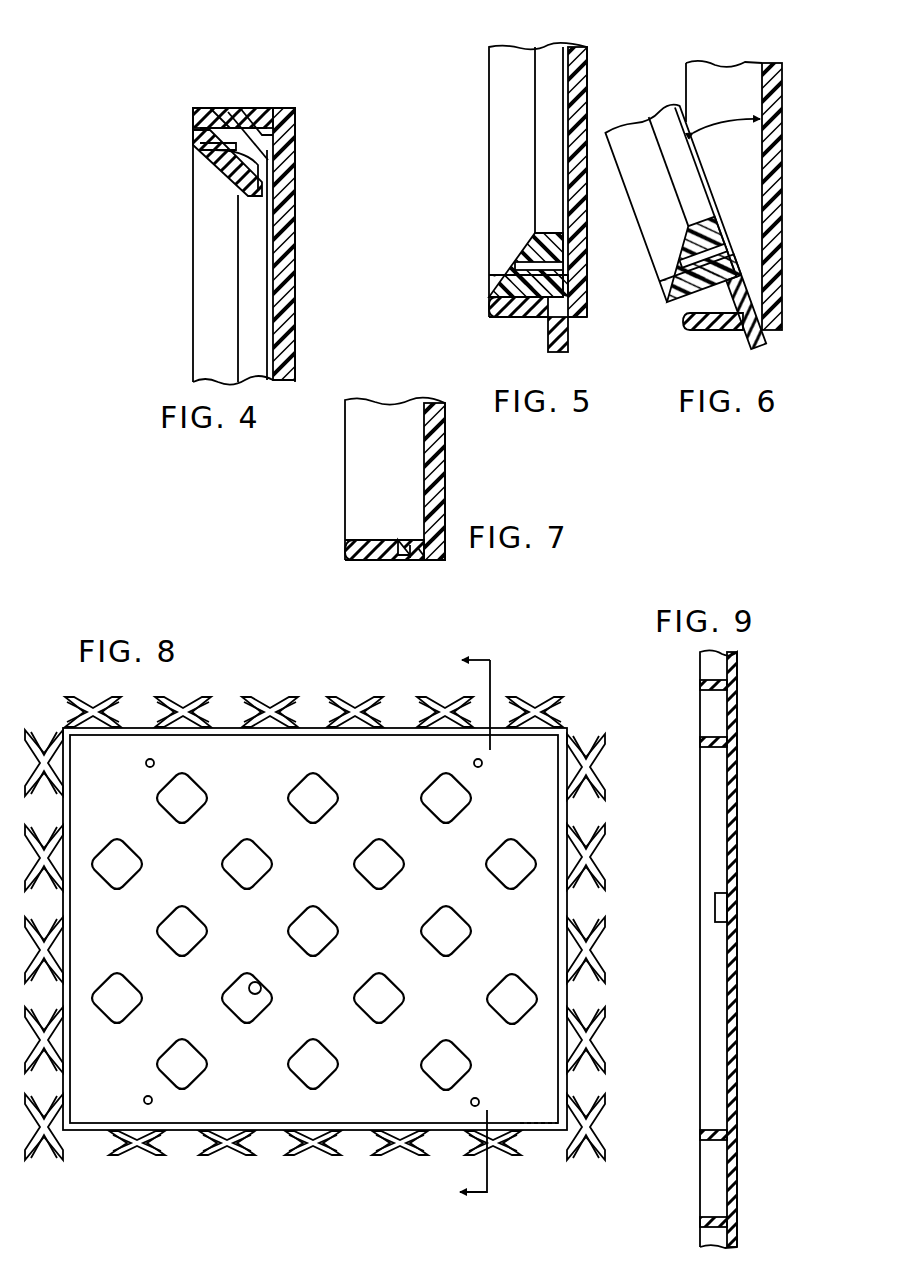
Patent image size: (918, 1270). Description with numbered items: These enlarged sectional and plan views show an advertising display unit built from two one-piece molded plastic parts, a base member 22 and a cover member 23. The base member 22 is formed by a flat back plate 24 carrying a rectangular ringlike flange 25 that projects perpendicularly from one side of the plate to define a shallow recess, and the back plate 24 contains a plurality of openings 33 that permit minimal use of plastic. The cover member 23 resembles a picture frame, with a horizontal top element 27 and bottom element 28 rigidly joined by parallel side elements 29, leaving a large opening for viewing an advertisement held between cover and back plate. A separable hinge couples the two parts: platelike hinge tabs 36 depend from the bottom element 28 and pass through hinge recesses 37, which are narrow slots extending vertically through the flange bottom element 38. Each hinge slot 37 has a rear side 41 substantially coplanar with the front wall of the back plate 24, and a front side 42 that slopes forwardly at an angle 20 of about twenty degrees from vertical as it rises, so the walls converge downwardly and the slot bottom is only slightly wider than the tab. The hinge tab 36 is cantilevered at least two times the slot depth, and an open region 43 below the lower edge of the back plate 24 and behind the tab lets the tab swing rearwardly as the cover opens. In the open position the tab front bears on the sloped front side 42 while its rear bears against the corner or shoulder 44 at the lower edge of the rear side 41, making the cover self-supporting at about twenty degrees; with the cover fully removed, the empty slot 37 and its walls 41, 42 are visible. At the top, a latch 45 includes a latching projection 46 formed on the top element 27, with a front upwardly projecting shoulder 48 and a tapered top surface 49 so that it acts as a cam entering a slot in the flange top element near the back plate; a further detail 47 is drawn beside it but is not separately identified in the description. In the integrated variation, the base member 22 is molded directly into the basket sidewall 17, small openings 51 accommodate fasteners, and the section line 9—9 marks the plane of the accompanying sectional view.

In FIG. 8, the section line 9 is at (463, 934).
In FIG. 8, the sidewall 17 is at (588, 850).
In FIG. 9, the sidewall 17 is at (712, 662).
In FIG. 6, the twenty-degree angle 20 is at (726, 113).
In FIG. 4, the base member 22 is at (305, 322).
In FIG. 5, the base member 22 is at (590, 60).
In FIG. 7, the base member 22 is at (340, 477).
In FIG. 8, the base member 22 is at (222, 722).
In FIG. 9, the base member 22 is at (745, 808).
In FIG. 4, the cover member 23 is at (190, 236).
In FIG. 5, the cover member 23 is at (485, 192).
In FIG. 6, the cover member 23 is at (636, 118).
In FIG. 4, the back plate 24 is at (287, 280).
In FIG. 5, the back plate 24 is at (580, 112).
In FIG. 6, the back plate 24 is at (778, 180).
In FIG. 7, the back plate 24 is at (438, 462).
In FIG. 8, the back plate 24 is at (315, 932).
In FIG. 9, the back plate 24 is at (732, 962).
In FIG. 4, the ringlike flange 25 is at (205, 108).
In FIG. 7, the ringlike flange 25 is at (385, 412).
In FIG. 8, the ringlike flange 25 is at (305, 730).
In FIG. 9, the ringlike flange 25 is at (714, 1008).
In FIG. 4, the top element 27 is at (215, 165).
In FIG. 5, the bottom element 28 is at (500, 270).
In FIG. 6, the bottom element 28 is at (670, 318).
In FIG. 4, the side elements 29 is at (212, 298).
In FIG. 5, the side elements 29 is at (495, 128).
In FIG. 6, the side elements 29 is at (652, 240).
In FIG. 8, the openings 33 is at (262, 992).
In FIG. 5, the hinge tab 36 is at (556, 343).
In FIG. 6, the hinge tab 36 is at (760, 340).
In FIG. 5, the hinge recess 37 is at (545, 322).
In FIG. 6, the hinge recess 37 is at (768, 330).
In FIG. 7, the hinge recess 37 is at (412, 558).
In FIG. 8, the hinge recess 37 is at (530, 1120).
In FIG. 5, the flange bottom element 38 is at (492, 306).
In FIG. 6, the flange bottom element 38 is at (722, 328).
In FIG. 7, the flange bottom element 38 is at (350, 545).
In FIG. 8, the flange bottom element 38 is at (197, 1140).
In FIG. 9, the flange bottom element 38 is at (712, 1128).
In FIG. 7, the rear side 41 is at (415, 560).
In FIG. 7, the front side 42 is at (410, 540).
In FIG. 5, the open region 43 is at (575, 330).
In FIG. 8, the open region 43 is at (534, 1150).
In FIG. 7, the shoulder 44 is at (422, 562).
In FIG. 4, the latch 45 is at (268, 108).
In FIG. 4, the latching projection 46 is at (262, 165).
In FIG. 4, the lip 47 is at (260, 120).
In FIG. 4, the front shoulder 48 is at (216, 108).
In FIG. 4, the tapered top surface 49 is at (252, 108).
In FIG. 9, the tapered top surface 49 is at (722, 903).
In FIG. 8, the small openings 51 is at (144, 1100).